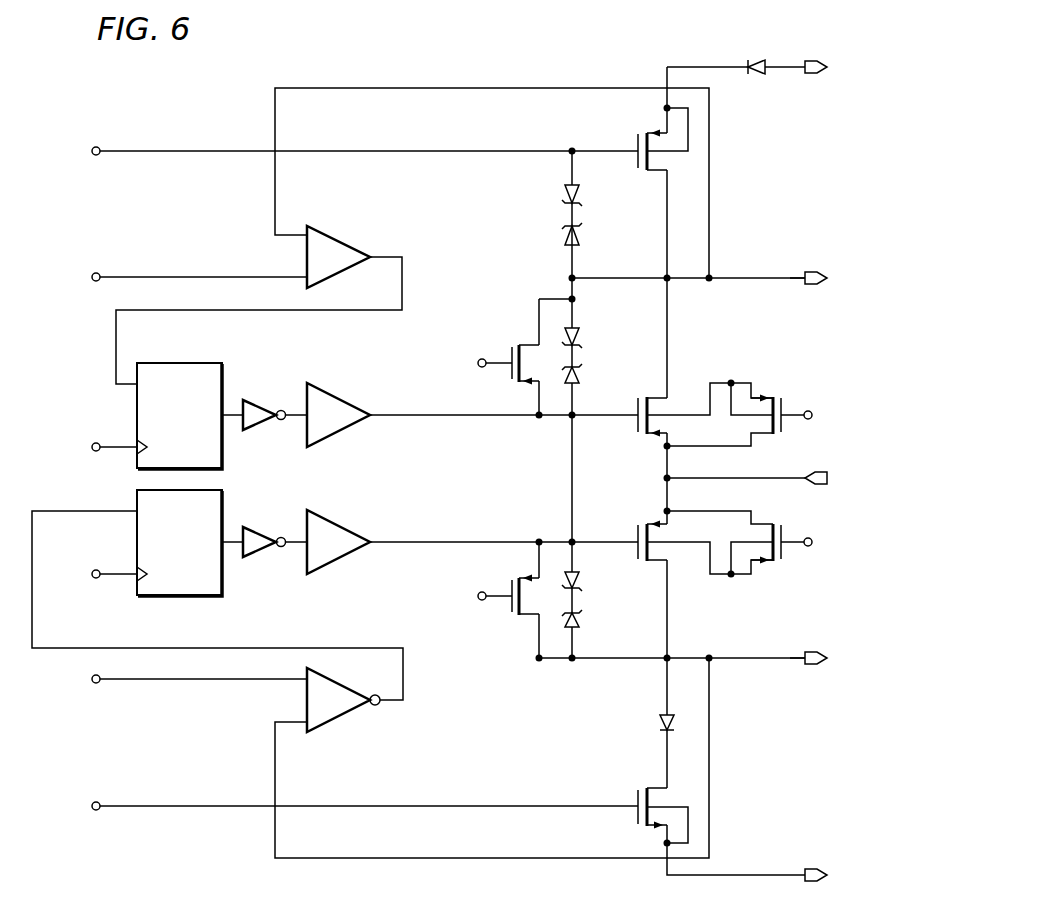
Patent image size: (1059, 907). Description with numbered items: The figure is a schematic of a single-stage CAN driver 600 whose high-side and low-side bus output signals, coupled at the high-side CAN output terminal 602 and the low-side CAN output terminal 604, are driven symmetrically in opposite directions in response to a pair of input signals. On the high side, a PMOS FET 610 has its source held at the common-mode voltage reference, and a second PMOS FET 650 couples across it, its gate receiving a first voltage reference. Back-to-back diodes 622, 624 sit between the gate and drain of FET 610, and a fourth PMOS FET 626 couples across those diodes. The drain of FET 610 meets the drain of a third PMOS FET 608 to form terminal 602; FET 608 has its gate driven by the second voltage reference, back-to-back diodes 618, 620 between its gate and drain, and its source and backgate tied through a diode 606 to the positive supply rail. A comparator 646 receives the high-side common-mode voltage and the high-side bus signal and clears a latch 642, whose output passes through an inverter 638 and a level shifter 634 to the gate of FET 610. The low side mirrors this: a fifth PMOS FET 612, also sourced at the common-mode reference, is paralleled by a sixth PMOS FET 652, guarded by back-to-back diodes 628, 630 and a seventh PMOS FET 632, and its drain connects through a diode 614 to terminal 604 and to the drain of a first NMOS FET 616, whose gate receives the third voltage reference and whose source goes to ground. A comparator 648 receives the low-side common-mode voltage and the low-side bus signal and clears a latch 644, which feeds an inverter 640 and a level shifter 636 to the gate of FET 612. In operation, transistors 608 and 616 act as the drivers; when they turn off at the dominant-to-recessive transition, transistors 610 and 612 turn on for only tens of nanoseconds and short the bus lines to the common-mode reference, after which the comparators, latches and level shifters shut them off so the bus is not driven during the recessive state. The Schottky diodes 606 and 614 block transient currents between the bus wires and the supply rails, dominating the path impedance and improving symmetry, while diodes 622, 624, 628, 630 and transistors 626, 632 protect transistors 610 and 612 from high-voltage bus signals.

The driver 600 is at (168, 108).
The high-side CAN output terminal 602 is at (812, 272).
The low-side CAN output terminal 604 is at (812, 667).
The diode 606 is at (755, 60).
The third PMOS FET 608 is at (636, 145).
The PMOS field effect transistor 610 is at (636, 425).
The fifth PMOS FET 612 is at (636, 535).
The diode 614 is at (658, 722).
The first NMOS FET 616 is at (636, 797).
The diode 618 is at (566, 192).
The diode 620 is at (566, 235).
The diode 622 is at (578, 334).
The diode 624 is at (578, 376).
The fourth PMOS FET 626 is at (510, 352).
The diode 628 is at (580, 580).
The diode 630 is at (580, 622).
The seventh PMOS FET 632 is at (510, 586).
The level shifter 634 is at (342, 398).
The level shifter 636 is at (340, 567).
The inverter 638 is at (262, 404).
The inverter 640 is at (262, 556).
The latch 642 is at (224, 446).
The latch 644 is at (224, 515).
The comparator 646 is at (342, 240).
The comparator 648 is at (340, 720).
The second PMOS FET 650 is at (786, 402).
The sixth PMOS FET 652 is at (786, 530).